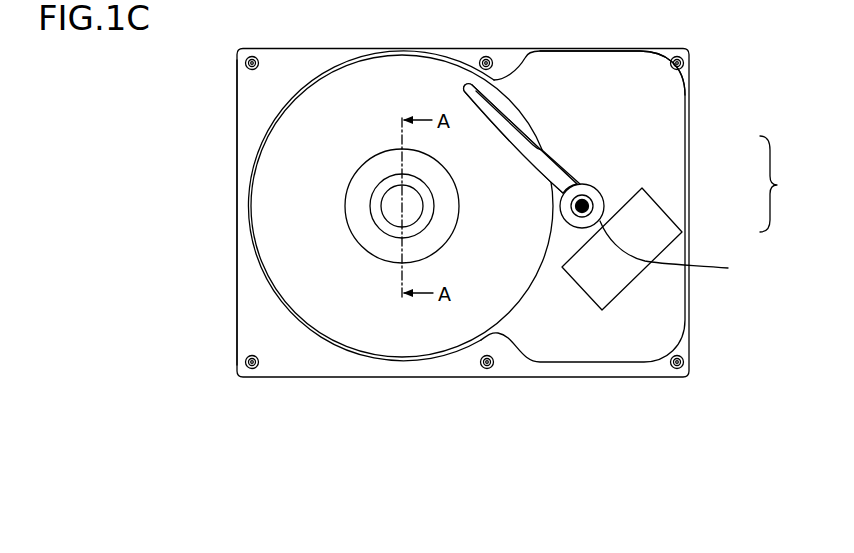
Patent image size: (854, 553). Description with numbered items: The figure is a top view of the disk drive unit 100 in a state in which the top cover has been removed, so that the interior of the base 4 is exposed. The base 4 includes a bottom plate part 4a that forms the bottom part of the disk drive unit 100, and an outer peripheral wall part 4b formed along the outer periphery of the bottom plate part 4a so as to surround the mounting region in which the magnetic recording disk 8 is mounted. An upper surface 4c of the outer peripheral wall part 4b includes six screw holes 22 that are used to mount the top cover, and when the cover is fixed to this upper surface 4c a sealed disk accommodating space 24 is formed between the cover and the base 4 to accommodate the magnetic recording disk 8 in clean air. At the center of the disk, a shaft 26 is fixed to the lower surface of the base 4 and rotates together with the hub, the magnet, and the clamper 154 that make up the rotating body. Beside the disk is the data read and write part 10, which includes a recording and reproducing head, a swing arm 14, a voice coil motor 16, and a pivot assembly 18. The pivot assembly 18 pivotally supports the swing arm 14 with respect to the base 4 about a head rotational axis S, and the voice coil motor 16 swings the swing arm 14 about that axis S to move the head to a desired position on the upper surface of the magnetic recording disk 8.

The disk drive unit 100 is at (484, 463).
The base 4 is at (692, 108).
The bottom plate part 4a is at (547, 66).
The outer peripheral wall part 4b is at (312, 75).
The upper surface 4c is at (244, 96).
The magnetic recording disk 8 is at (397, 75).
The data read and write part 10 is at (783, 184).
The swing arm 14 is at (558, 165).
The voice coil motor 16 is at (657, 227).
The pivot assembly 18 is at (592, 200).
The screw holes 22 is at (252, 56).
The disk accommodating space 24 is at (602, 66).
The shaft 26 is at (389, 208).
The clamper 154 is at (364, 237).
The head rotational axis S is at (672, 250).